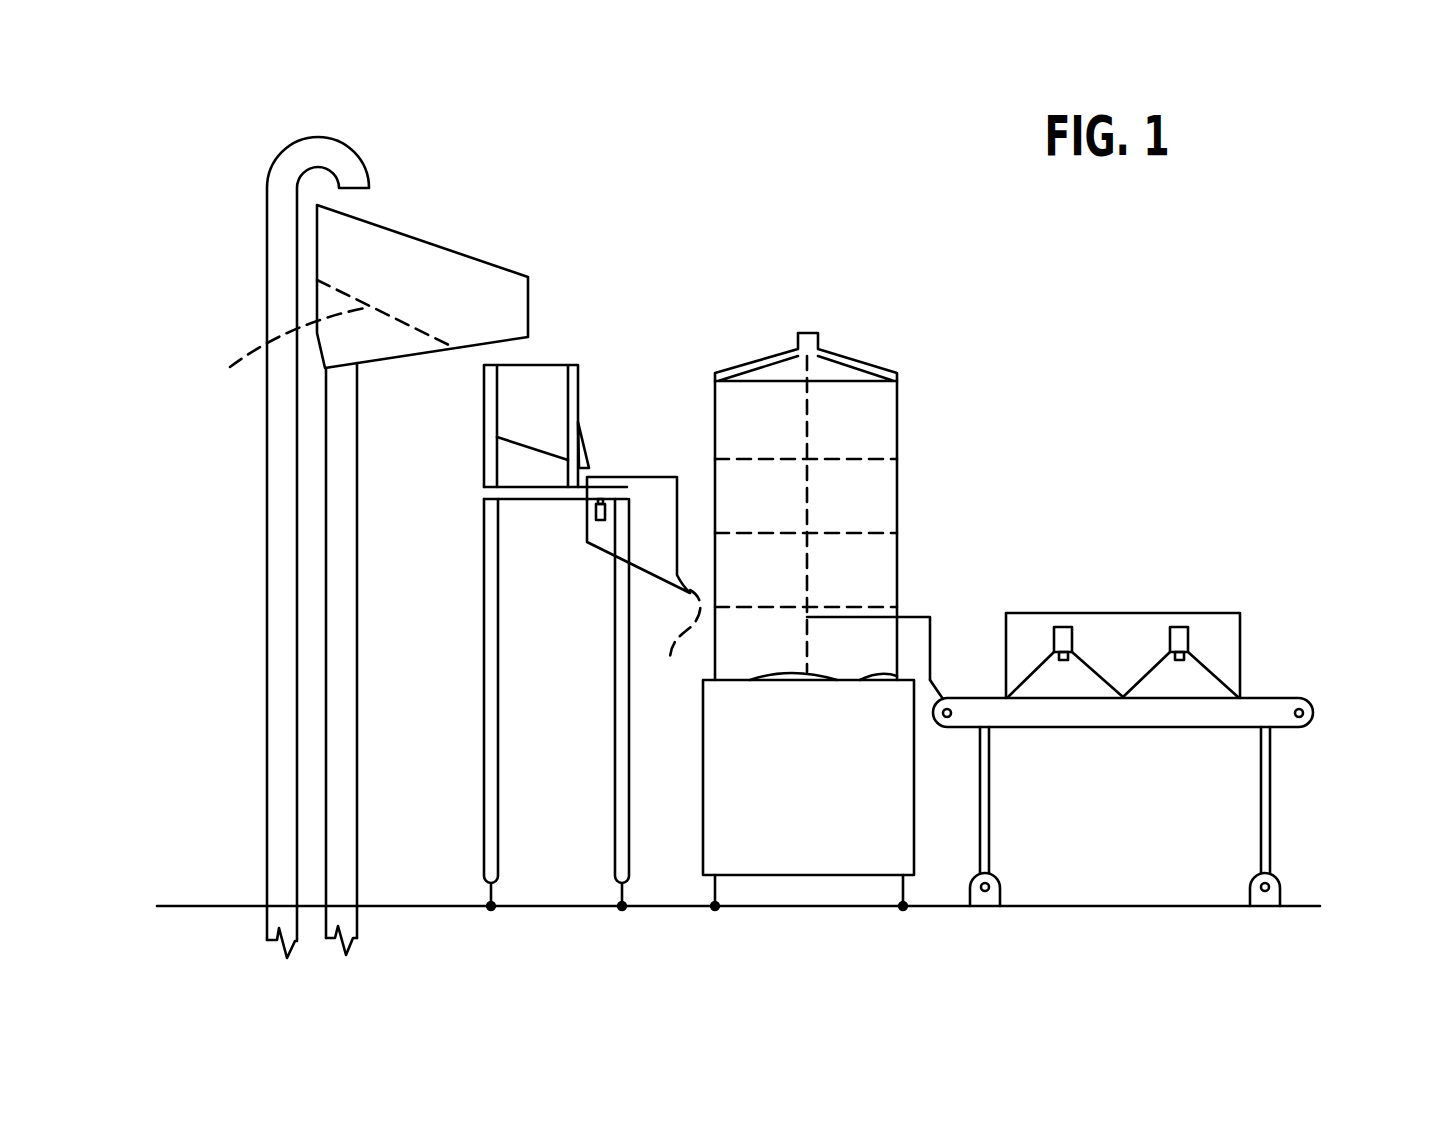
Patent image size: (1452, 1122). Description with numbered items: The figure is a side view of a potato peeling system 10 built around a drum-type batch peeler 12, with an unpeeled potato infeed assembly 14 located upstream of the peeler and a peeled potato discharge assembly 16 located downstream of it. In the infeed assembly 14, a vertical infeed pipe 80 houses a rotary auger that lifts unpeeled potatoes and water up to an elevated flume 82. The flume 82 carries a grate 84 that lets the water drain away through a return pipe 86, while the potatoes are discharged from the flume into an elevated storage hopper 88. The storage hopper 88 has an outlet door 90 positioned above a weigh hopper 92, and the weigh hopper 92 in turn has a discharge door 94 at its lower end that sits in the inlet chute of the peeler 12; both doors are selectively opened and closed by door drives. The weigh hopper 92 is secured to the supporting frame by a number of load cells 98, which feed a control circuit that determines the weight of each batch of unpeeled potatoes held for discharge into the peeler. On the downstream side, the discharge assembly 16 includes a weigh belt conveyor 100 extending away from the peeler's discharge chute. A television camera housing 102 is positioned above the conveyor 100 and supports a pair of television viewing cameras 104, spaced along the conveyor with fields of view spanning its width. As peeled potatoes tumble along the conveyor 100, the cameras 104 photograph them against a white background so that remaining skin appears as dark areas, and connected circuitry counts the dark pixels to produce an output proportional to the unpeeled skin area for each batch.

The potato peeling system 10 is at (1245, 238).
The drum-type batch peeler 12 is at (883, 335).
The unpeeled potato infeed assembly 14 is at (465, 200).
The peeled potato discharge assembly 16 is at (1303, 617).
The vertical infeed pipe 80 is at (265, 712).
The elevated flume 82 is at (507, 300).
The grate 84 is at (280, 355).
The return pipe 86 is at (357, 762).
The elevated storage hopper 88 is at (525, 390).
The outlet door 90 is at (587, 455).
The weigh hopper 92 is at (660, 498).
The discharge door 94 is at (675, 642).
The load cells 98 is at (593, 512).
The weigh belt conveyor 100 is at (1037, 728).
The television camera housing 102 is at (1240, 663).
The television viewing cameras 104 is at (1065, 640).